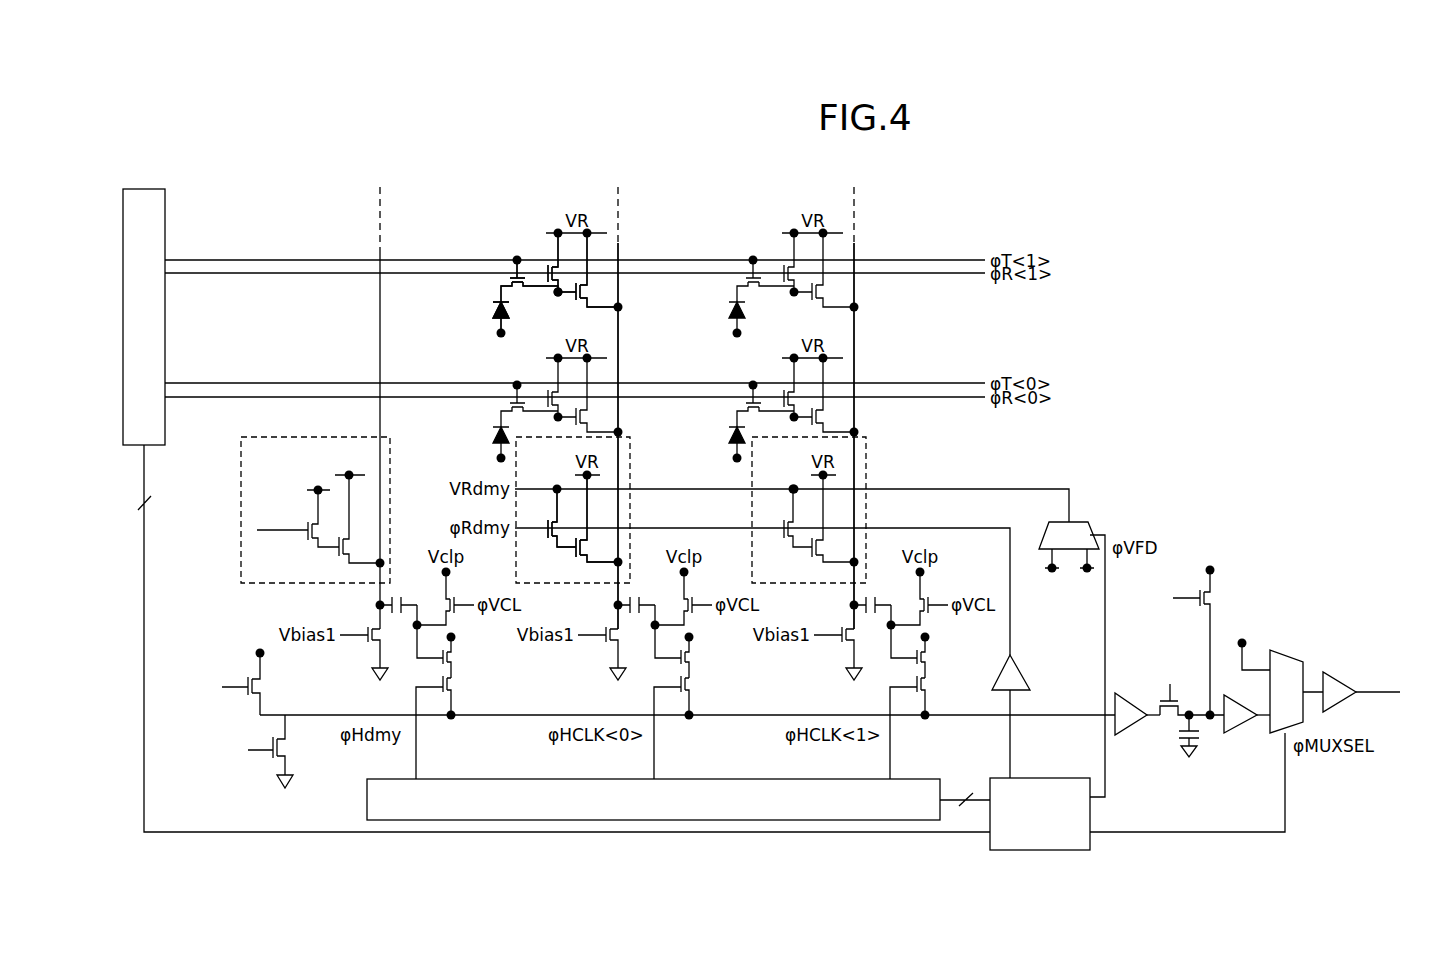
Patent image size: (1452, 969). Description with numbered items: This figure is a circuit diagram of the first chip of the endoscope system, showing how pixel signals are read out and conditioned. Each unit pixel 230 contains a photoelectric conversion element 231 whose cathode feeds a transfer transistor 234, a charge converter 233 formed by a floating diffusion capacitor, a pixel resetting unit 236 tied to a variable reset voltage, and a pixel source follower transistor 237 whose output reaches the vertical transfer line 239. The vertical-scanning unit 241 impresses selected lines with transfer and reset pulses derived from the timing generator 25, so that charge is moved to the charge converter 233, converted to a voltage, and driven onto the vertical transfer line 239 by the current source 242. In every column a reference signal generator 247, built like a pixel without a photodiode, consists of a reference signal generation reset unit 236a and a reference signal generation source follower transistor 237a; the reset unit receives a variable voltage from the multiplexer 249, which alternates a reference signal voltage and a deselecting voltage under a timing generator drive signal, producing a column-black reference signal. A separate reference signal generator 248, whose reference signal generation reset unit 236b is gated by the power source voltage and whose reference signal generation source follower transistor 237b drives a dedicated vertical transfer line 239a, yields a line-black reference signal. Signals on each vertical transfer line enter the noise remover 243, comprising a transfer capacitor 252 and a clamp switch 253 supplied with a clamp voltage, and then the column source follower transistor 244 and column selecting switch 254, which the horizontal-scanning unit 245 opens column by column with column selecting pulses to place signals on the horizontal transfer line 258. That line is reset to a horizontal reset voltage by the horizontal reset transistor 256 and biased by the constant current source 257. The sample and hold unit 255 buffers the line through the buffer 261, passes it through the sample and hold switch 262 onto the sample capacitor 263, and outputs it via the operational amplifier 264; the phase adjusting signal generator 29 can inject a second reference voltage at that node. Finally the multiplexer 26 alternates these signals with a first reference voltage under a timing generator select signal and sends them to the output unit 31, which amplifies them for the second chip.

The vertical-scanning unit 241 is at (141, 189).
The unit pixel 230 is at (633, 234).
The photoelectric conversion element 231 is at (493, 310).
The charge converter 233 is at (556, 294).
The transfer transistor 234 is at (505, 282).
The pixel resetting unit 236 is at (548, 272).
The pixel source follower transistor 237 is at (590, 300).
The vertical transfer line 239 is at (620, 290).
The dedicated vertical transfer line 239a is at (380, 289).
The reference signal generator 247 is at (633, 449).
The reference signal generator 248 is at (393, 449).
The reference signal generation reset unit 236a is at (548, 526).
The reference signal generation source follower transistor 237a is at (580, 556).
The reference signal generation reset unit 236b is at (309, 541).
The reference signal generation source follower transistor 237b is at (340, 558).
The current source 242 is at (570, 642).
The noise remover 243 is at (656, 591).
The transfer capacitor 252 is at (609, 599).
The clamp switch 253 is at (706, 586).
The column source follower transistor 244 is at (715, 656).
The column selecting switch 254 is at (702, 725).
The horizontal-scanning unit 245 is at (518, 779).
The horizontal reset transistor 256 is at (248, 680).
The constant current source 257 is at (273, 746).
The horizontal transfer line 258 is at (779, 715).
The timing generator 25 is at (1056, 778).
The multiplexer 249 is at (1073, 522).
The sample and hold unit 255 is at (1150, 652).
The buffer 261 is at (1127, 737).
The sample and hold switch 262 is at (1166, 717).
The sample capacitor 263 is at (1197, 754).
The operational amplifier 264 is at (1254, 691).
The multiplexer 26 is at (1283, 650).
The output unit 31 is at (1337, 672).
The phase adjusting signal generator 29 is at (1208, 600).